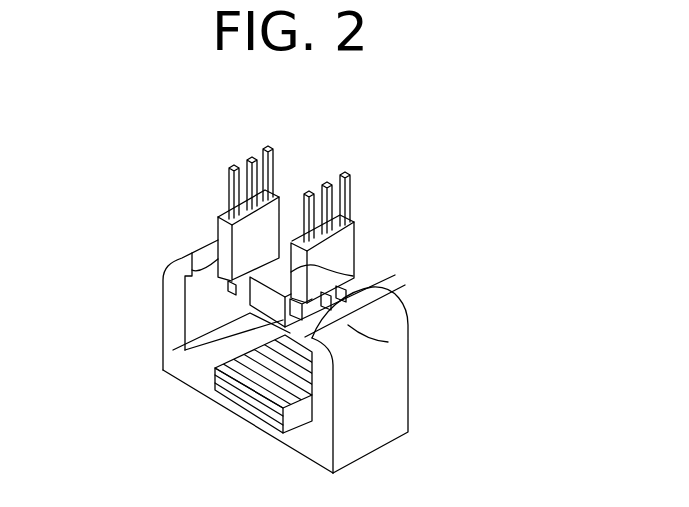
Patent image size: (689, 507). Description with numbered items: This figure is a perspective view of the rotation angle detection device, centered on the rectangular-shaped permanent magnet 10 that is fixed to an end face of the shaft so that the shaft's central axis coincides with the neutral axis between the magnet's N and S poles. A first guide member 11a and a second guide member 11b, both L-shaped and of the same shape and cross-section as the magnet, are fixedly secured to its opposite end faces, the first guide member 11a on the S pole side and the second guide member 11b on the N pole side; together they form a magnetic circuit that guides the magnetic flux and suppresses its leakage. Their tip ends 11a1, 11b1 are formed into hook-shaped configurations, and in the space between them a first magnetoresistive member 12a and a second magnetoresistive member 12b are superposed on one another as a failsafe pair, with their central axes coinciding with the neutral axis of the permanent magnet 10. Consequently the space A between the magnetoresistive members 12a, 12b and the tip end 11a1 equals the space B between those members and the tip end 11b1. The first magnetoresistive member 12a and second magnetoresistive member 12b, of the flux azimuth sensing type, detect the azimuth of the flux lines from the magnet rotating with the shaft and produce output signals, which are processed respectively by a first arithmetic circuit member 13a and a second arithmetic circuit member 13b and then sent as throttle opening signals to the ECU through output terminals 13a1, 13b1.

The permanent magnet 10 is at (247, 398).
The first guide member 11a is at (378, 400).
The tip end of the first guide member 11a1 is at (388, 342).
The second guide member 11b is at (173, 310).
The tip end of the second guide member 11b1 is at (205, 248).
The first magnetoresistive member 12a is at (355, 272).
The second magnetoresistive member 12b is at (173, 350).
The first arithmetic circuit member 13a is at (333, 238).
The output terminal 13a1 is at (343, 180).
The second arithmetic circuit member 13b is at (262, 229).
The output terminal 13b1 is at (253, 152).
The space A is at (380, 294).
The space B is at (201, 258).